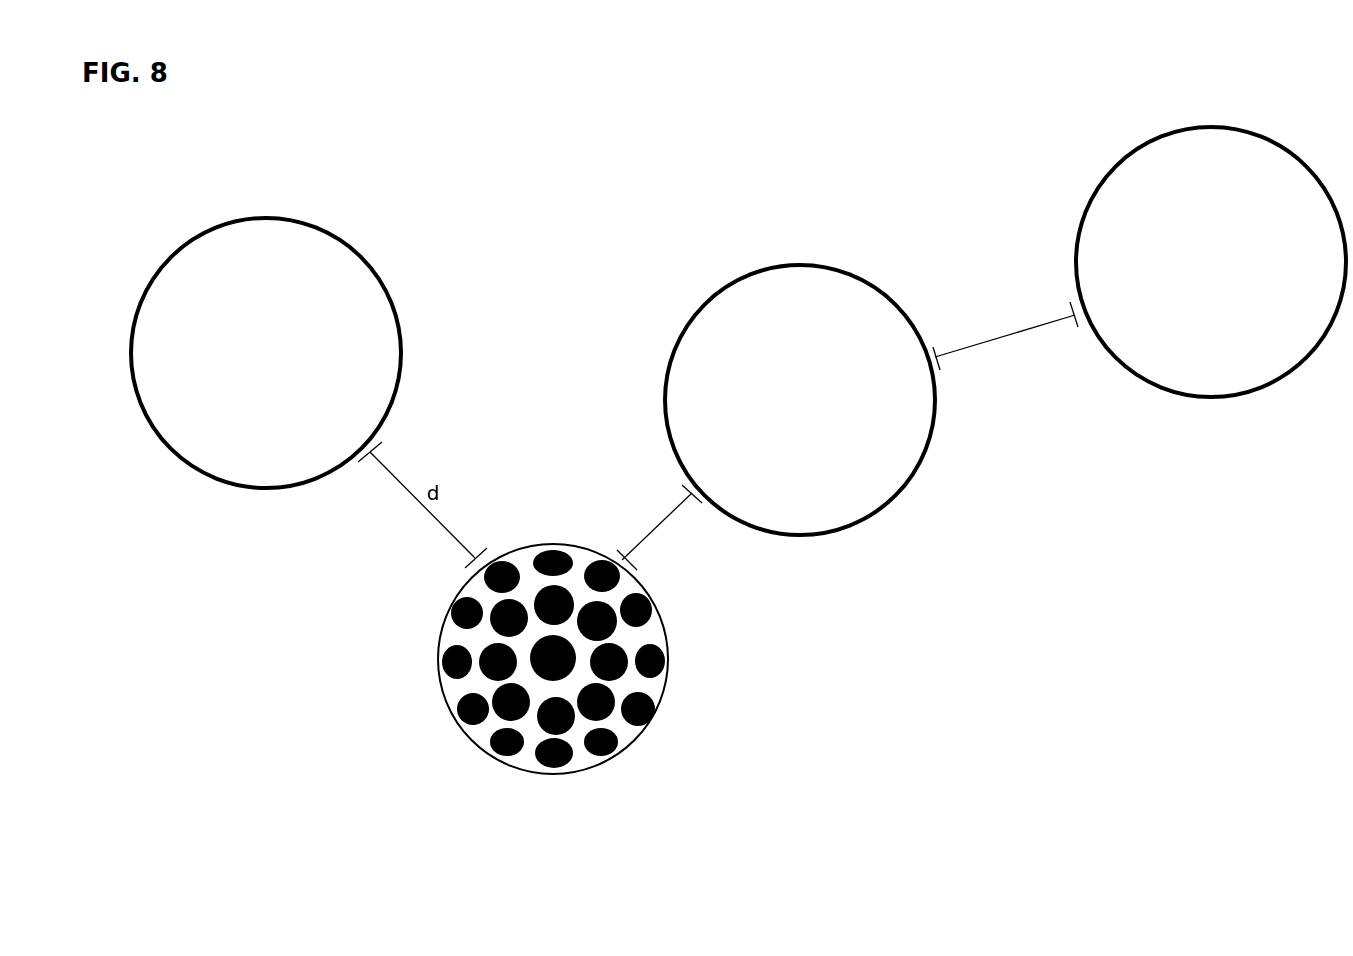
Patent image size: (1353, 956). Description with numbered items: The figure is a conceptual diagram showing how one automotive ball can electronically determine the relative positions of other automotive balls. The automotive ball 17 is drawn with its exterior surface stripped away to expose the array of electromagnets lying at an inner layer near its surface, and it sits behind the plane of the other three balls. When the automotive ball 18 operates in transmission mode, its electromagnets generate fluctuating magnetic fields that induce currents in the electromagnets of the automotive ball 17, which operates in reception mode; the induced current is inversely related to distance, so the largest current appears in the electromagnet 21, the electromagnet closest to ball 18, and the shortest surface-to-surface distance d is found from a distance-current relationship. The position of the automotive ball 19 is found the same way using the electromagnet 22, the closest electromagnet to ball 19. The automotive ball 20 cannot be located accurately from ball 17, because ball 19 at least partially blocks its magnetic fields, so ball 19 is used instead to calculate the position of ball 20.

The automotive ball 17 is at (645, 758).
The automotive ball 18 is at (279, 370).
The automotive ball 19 is at (817, 416).
The automotive ball 20 is at (1226, 276).
The electromagnet 21 is at (488, 579).
The electromagnet 22 is at (613, 578).